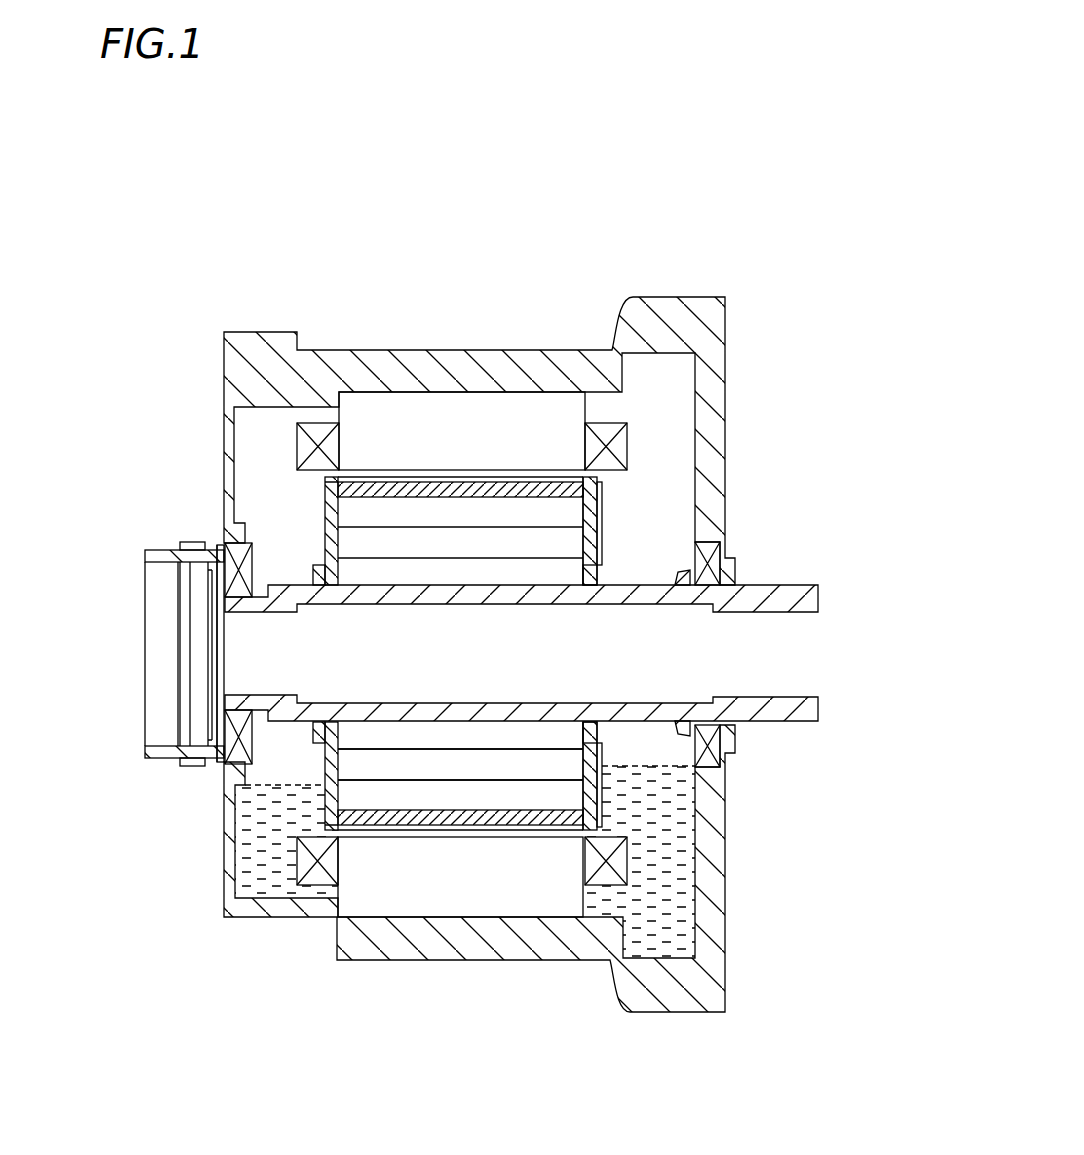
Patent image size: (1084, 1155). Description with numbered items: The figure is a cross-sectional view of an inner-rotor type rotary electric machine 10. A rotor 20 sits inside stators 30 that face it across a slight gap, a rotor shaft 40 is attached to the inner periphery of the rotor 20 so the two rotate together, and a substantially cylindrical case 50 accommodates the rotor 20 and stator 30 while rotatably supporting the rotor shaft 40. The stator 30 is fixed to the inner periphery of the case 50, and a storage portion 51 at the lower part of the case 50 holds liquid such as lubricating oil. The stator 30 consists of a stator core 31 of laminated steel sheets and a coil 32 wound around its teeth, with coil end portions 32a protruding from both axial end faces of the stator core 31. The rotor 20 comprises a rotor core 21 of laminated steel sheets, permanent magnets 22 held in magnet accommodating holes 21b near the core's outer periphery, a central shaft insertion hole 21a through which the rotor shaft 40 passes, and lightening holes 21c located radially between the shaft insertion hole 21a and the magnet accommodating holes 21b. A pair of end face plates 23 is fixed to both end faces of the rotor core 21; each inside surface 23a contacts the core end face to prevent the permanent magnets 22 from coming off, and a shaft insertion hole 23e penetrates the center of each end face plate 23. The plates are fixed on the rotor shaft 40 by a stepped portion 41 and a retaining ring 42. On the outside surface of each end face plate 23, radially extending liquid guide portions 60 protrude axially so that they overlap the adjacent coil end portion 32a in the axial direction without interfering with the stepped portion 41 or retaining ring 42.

The rotary electric machine 10 is at (536, 148).
The rotor 20 is at (510, 669).
The rotor core 21 is at (577, 648).
The shaft insertion hole 21a is at (508, 740).
The magnet accommodating hole 21b is at (455, 770).
The lightening hole 21c is at (607, 548).
The permanent magnet 22 is at (427, 481).
The end face plate 23 is at (510, 670).
The inside surface 23a is at (343, 540).
The shaft insertion hole 23e is at (590, 607).
The stator 30 is at (628, 425).
The stator core 31 is at (488, 408).
The coil 32 is at (440, 567).
The coil end portion 32a is at (316, 430).
The rotor shaft 40 is at (820, 590).
The stepped portion 41 is at (607, 580).
The retaining ring 42 is at (315, 574).
The case 50 is at (226, 882).
The storage portion 51 is at (267, 870).
The liquid guide portion 60 is at (322, 497).